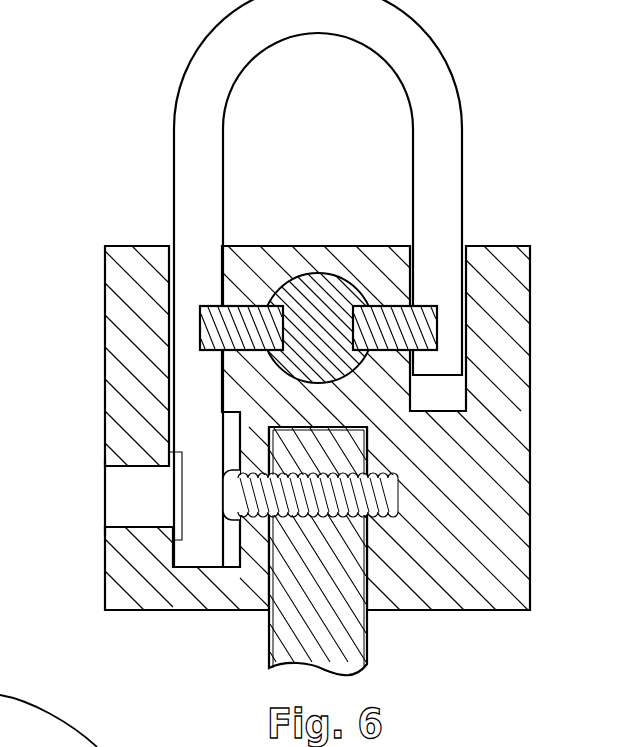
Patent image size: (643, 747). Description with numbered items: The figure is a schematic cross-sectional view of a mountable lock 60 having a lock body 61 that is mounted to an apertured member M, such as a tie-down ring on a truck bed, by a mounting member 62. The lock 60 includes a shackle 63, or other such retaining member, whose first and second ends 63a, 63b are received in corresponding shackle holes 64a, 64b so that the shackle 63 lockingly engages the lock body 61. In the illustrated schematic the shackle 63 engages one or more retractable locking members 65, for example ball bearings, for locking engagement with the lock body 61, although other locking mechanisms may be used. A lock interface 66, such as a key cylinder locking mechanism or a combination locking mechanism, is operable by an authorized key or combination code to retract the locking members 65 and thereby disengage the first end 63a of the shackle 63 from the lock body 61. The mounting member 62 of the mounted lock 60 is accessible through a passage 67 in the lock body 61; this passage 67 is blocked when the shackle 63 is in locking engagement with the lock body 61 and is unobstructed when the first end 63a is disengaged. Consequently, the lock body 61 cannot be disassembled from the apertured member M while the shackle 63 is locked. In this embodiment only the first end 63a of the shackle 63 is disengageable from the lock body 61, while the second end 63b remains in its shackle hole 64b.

The lock 60 is at (303, 340).
The lock body 61 is at (503, 506).
The mounting member 62 is at (255, 486).
The shackle 63 is at (397, 54).
The first end of the shackle 63a is at (450, 343).
The second end of the shackle 63b is at (203, 470).
The shackle hole 64a is at (414, 248).
The shackle hole 64b is at (172, 268).
The retractable locking members 65 is at (200, 327).
The lock interface 66 is at (317, 297).
The passage 67 is at (140, 527).
The apertured member M is at (332, 633).